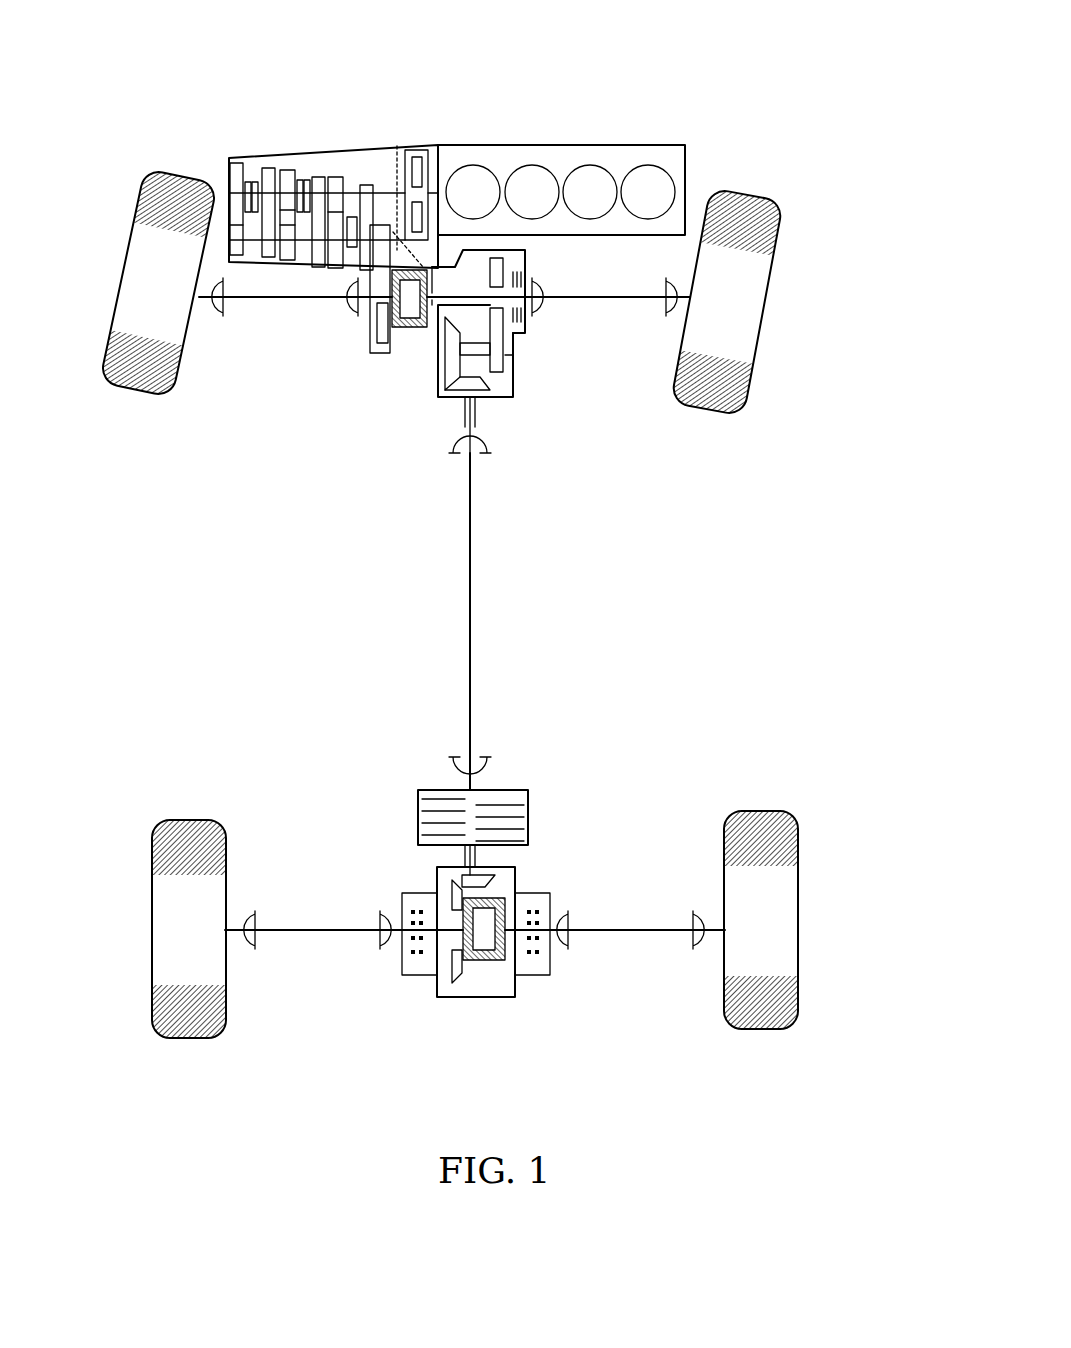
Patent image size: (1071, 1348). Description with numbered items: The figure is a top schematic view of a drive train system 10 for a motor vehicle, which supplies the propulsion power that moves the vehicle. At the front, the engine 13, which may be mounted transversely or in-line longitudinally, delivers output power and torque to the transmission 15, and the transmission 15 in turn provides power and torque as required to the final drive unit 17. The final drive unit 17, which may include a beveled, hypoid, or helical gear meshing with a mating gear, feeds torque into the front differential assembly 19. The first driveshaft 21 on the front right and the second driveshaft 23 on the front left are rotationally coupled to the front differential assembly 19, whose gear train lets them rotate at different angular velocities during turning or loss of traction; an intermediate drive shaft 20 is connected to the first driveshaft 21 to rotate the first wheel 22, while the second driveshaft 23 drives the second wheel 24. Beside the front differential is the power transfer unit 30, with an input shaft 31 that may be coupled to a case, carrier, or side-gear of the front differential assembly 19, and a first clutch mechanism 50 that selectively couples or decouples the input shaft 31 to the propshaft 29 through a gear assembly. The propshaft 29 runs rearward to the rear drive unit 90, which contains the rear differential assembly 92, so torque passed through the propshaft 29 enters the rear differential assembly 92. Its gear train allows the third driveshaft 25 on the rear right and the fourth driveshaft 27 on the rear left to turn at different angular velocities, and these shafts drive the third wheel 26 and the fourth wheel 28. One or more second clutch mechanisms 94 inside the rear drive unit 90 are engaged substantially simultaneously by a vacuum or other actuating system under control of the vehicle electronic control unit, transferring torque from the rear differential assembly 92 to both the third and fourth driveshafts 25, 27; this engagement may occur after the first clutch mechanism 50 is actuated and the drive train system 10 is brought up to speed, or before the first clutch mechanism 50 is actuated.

The drive train system 10 is at (668, 86).
The engine 13 is at (512, 162).
The transmission 15 is at (362, 158).
The final drive unit 17 is at (372, 332).
The front differential assembly 19 is at (402, 330).
The intermediate drive shaft 20 is at (535, 278).
The first driveshaft 21 is at (640, 302).
The first wheel 22 is at (728, 413).
The second driveshaft 23 is at (310, 303).
The second wheel 24 is at (140, 393).
The third driveshaft 25 is at (592, 928).
The third wheel 26 is at (765, 810).
The fourth driveshaft 27 is at (367, 928).
The fourth wheel 28 is at (172, 820).
The propshaft 29 is at (477, 553).
The power transfer unit 30 is at (534, 416).
The input shaft 31 is at (432, 332).
The first clutch mechanism 50 is at (545, 334).
The rear drive unit 90 is at (563, 834).
The rear differential assembly 92 is at (488, 976).
The second clutch mechanism 94 is at (391, 964).